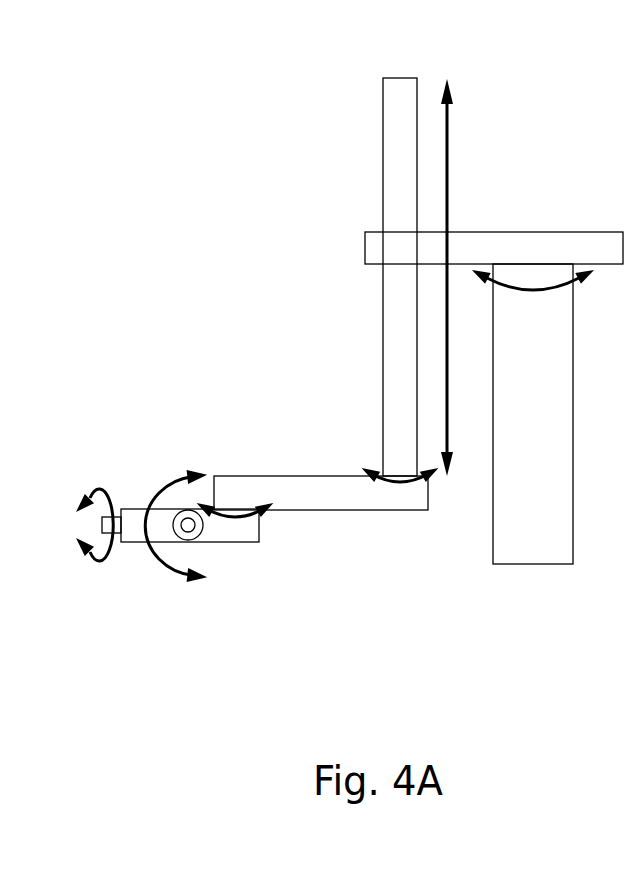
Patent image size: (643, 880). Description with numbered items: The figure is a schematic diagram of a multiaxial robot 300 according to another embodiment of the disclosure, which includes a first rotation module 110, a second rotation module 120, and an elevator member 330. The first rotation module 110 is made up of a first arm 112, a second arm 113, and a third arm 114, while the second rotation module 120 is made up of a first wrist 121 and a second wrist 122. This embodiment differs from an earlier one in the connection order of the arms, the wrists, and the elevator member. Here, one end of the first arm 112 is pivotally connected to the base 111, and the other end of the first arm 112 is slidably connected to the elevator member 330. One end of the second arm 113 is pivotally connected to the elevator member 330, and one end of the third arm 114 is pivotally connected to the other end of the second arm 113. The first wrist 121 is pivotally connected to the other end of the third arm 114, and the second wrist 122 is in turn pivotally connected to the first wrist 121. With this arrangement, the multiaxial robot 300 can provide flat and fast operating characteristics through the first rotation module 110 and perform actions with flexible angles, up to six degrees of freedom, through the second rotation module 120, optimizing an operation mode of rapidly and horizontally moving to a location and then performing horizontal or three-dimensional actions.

The multiaxial robot 300 is at (100, 41).
The elevator member 330 is at (400, 163).
The first rotation module 110 is at (372, 468).
The base 111 is at (512, 525).
The first arm 112 is at (465, 248).
The second arm 113 is at (345, 493).
The third arm 114 is at (211, 578).
The second rotation module 120 is at (137, 465).
The first wrist 121 is at (133, 520).
The second wrist 122 is at (96, 483).